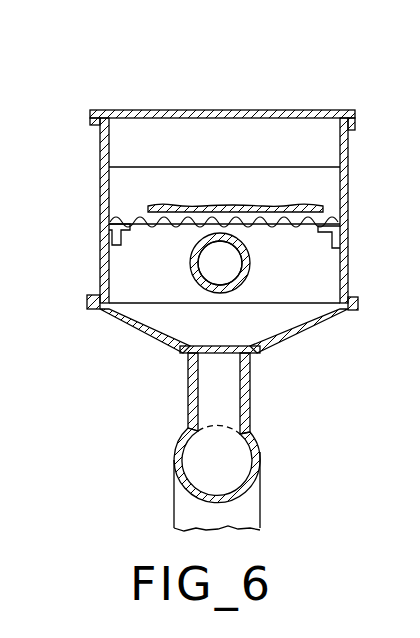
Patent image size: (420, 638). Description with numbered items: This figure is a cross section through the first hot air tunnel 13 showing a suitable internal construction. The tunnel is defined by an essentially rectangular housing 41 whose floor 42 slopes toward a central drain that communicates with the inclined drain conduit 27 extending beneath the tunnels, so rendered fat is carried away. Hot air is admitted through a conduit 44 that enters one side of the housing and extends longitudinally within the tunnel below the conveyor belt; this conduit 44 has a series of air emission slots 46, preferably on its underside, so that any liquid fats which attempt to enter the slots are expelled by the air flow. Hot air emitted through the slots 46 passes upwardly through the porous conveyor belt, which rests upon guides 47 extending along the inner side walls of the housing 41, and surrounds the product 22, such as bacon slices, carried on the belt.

The first hot air tunnel 13 is at (221, 88).
The housing 41 is at (348, 183).
The product 22 is at (198, 207).
The guides 47 is at (121, 231).
The conduit 44 is at (191, 266).
The air emission slots 46 is at (237, 288).
The floor 42 is at (293, 337).
The drain conduit 27 is at (261, 488).